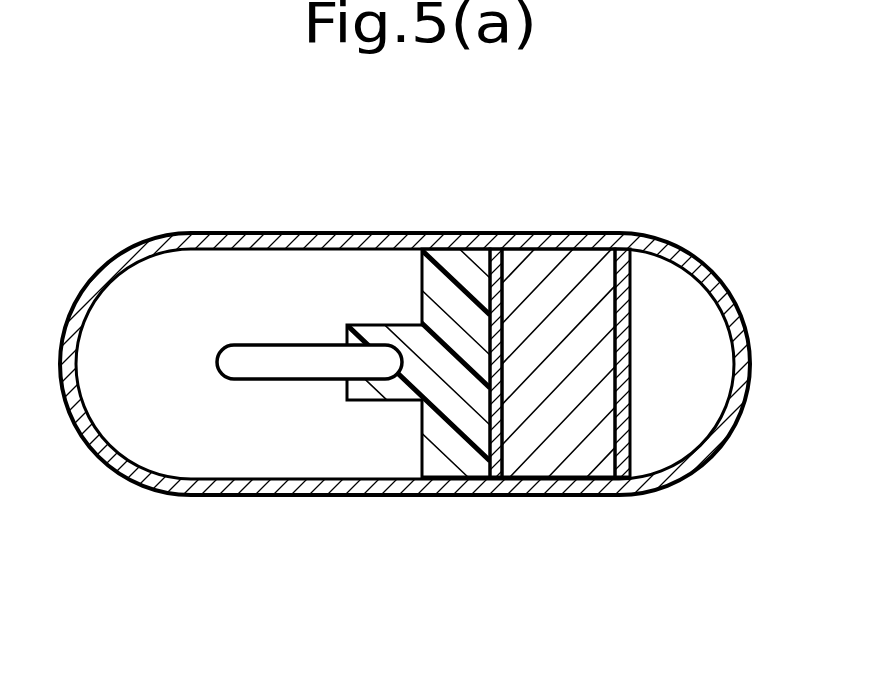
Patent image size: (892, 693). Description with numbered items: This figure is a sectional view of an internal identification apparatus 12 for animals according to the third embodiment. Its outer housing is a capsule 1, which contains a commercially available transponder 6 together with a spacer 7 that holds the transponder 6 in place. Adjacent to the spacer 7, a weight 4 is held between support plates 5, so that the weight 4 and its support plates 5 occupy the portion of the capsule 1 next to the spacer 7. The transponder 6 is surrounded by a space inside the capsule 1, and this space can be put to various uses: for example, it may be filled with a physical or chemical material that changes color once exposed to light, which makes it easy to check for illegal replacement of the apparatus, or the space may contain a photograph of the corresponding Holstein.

The capsule 1 is at (725, 287).
The weight 4 is at (592, 258).
The support plates 5 is at (632, 344).
The transponder 6 is at (228, 353).
The spacer 7 is at (422, 432).
The internal identification apparatus 12 is at (547, 218).